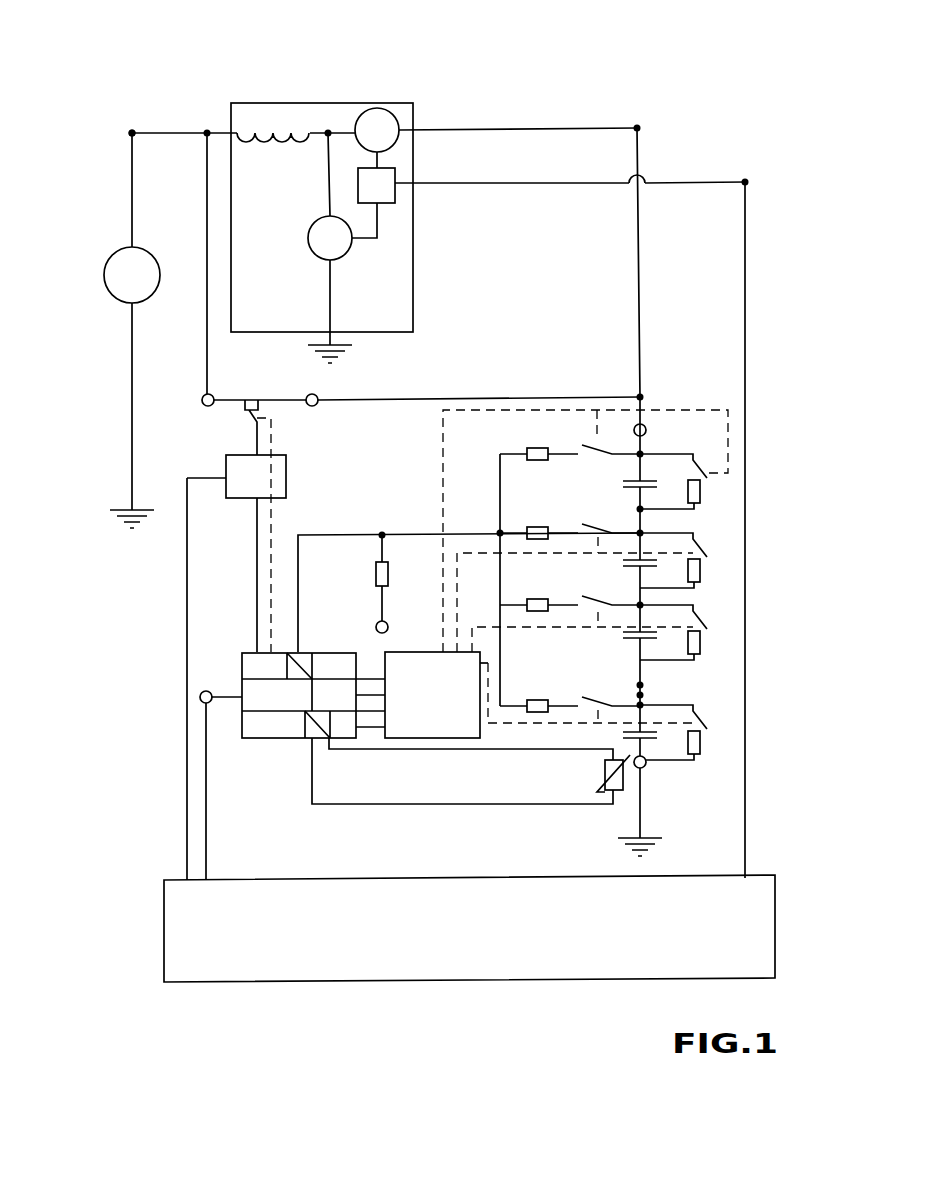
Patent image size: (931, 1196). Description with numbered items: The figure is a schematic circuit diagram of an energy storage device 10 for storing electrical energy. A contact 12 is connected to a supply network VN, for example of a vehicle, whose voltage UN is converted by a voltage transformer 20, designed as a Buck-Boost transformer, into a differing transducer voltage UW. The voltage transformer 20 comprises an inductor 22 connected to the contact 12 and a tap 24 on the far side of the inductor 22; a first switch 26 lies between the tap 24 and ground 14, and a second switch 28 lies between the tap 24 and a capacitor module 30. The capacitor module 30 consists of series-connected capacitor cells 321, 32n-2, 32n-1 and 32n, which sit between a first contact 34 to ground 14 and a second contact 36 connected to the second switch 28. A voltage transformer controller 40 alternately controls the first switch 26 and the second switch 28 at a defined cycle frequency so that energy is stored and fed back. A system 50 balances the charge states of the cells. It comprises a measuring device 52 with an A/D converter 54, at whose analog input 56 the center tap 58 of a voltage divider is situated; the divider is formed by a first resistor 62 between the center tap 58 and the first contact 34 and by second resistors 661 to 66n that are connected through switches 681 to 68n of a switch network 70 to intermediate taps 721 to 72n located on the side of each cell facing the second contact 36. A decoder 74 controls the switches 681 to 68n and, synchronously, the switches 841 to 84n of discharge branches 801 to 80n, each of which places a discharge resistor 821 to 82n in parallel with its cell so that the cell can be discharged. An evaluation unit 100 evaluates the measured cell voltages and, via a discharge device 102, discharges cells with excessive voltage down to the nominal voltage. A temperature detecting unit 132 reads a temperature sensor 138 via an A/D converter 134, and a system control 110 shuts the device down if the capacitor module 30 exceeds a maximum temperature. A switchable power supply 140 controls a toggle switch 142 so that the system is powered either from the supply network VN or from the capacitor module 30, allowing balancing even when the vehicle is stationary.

The energy storage device 10 is at (508, 50).
The contact 12 is at (133, 130).
The ground 14 is at (348, 355).
The voltage transformer 20 is at (327, 96).
The inductor 22 is at (270, 124).
The tap 24 is at (331, 130).
The first switch 26 is at (334, 246).
The second switch 28 is at (380, 124).
The capacitor module 30 is at (710, 518).
The capacitor cell 32n is at (672, 474).
The capacitor cell 32n-1 is at (678, 554).
The capacitor cell 32n-2 is at (678, 628).
The capacitor cell 321 is at (678, 730).
The first contact 34 is at (378, 623).
The second contact 36 is at (647, 429).
The voltage transformer controller 40 is at (384, 190).
The system 50 is at (215, 632).
The measuring device 52 is at (265, 661).
The A/D converter 54 is at (290, 672).
The analog input 56 is at (299, 652).
The center tap 58 is at (380, 534).
The first resistor 62 is at (378, 576).
The second resistor 66n is at (528, 452).
The second resistor 661 is at (538, 702).
The switch 68n is at (598, 447).
The switch 681 is at (598, 698).
The switch network 70 is at (580, 486).
The intermediate tap 72n is at (645, 453).
The intermediate tap 721 is at (648, 704).
The decoder 74 is at (423, 712).
The discharge branch 80n is at (716, 484).
The discharge branch 801 is at (716, 745).
The discharge resistor 82n is at (702, 499).
The discharge resistor 821 is at (702, 750).
The switch 84n is at (703, 477).
The switch 841 is at (703, 730).
The evaluation unit 100 is at (263, 706).
The discharge device 102 is at (330, 697).
The system control 110 is at (507, 958).
The temperature detecting unit 132 is at (247, 733).
The A/D converter 134 is at (318, 732).
The temperature sensor 138 is at (612, 770).
The switchable power supply 140 is at (252, 487).
The toggle switch 142 is at (236, 423).
The supply network voltage UN is at (112, 133).
The transducer voltage UW is at (593, 127).
The supply network VN is at (132, 275).